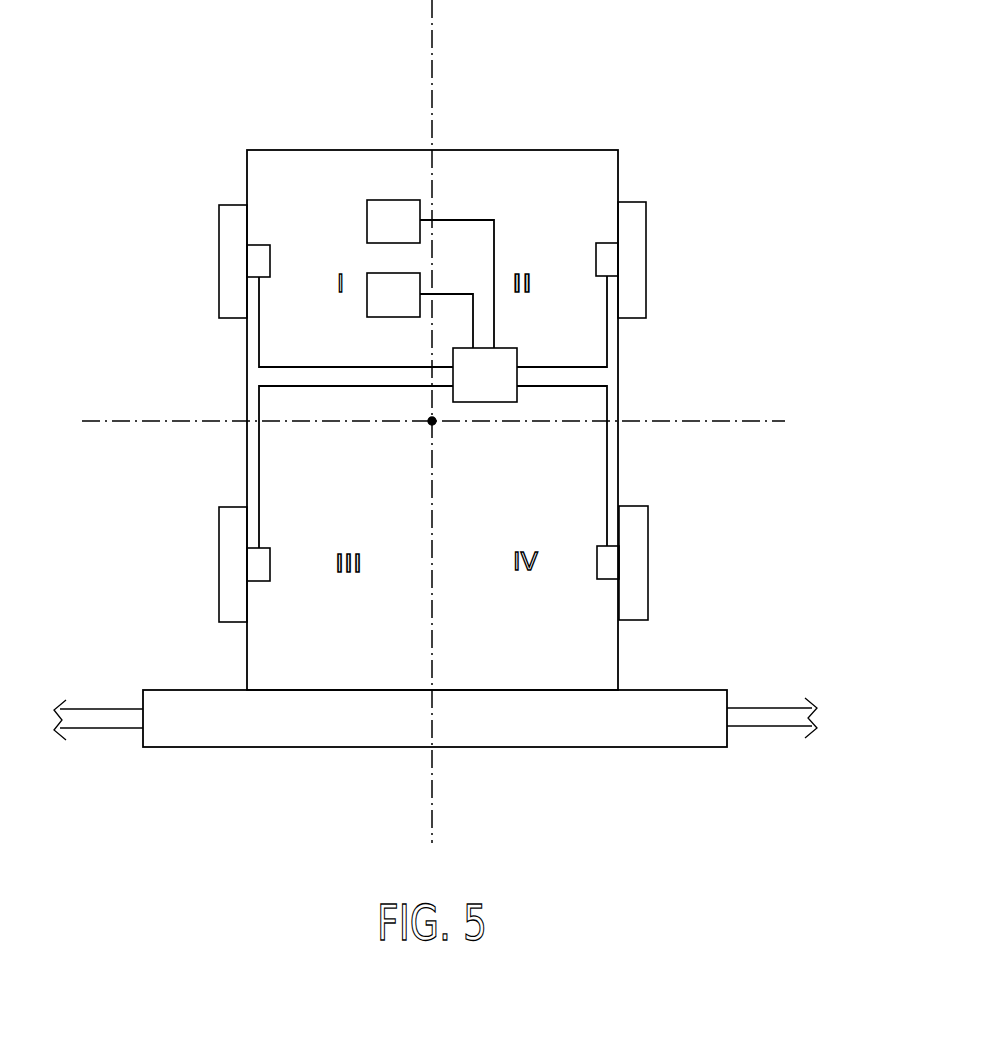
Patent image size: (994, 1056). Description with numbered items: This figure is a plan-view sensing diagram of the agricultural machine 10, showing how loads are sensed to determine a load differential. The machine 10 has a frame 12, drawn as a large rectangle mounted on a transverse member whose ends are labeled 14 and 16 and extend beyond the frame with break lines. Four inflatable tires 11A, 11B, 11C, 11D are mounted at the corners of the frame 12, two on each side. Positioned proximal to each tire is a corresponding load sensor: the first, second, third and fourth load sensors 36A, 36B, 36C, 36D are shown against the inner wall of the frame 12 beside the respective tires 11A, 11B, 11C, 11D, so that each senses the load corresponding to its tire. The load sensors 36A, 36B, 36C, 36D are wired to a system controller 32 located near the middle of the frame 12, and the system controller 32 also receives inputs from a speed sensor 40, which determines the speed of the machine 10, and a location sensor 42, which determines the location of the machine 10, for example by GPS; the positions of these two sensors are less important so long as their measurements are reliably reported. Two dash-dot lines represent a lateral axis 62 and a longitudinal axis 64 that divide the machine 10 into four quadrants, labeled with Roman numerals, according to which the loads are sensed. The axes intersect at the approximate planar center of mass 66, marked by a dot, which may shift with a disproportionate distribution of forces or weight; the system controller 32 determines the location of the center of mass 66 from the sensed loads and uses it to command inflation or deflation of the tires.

The machine 10 is at (617, 60).
The frame 12 is at (558, 150).
The shaft first end 14 is at (102, 729).
The shaft second end 16 is at (768, 727).
The first inflatable tire 11A is at (237, 204).
The second inflatable tire 11B is at (632, 202).
The third inflatable tire 11C is at (237, 506).
The fourth inflatable tire 11D is at (631, 506).
The first load sensor 36A is at (260, 245).
The second load sensor 36B is at (605, 243).
The third load sensor 36C is at (260, 548).
The fourth load sensor 36D is at (607, 546).
The system controller 32 is at (506, 382).
The speed sensor 40 is at (408, 234).
The location sensor 42 is at (408, 308).
The lateral axis 62 is at (433, 50).
The longitudinal axis 64 is at (750, 422).
The center of mass 66 is at (436, 425).